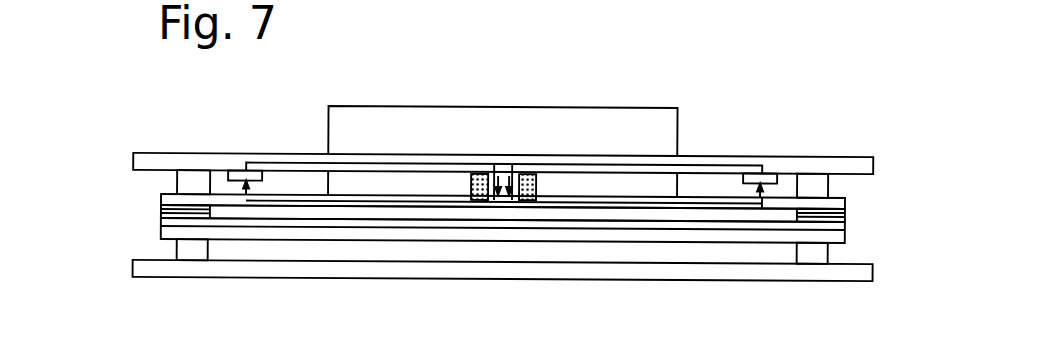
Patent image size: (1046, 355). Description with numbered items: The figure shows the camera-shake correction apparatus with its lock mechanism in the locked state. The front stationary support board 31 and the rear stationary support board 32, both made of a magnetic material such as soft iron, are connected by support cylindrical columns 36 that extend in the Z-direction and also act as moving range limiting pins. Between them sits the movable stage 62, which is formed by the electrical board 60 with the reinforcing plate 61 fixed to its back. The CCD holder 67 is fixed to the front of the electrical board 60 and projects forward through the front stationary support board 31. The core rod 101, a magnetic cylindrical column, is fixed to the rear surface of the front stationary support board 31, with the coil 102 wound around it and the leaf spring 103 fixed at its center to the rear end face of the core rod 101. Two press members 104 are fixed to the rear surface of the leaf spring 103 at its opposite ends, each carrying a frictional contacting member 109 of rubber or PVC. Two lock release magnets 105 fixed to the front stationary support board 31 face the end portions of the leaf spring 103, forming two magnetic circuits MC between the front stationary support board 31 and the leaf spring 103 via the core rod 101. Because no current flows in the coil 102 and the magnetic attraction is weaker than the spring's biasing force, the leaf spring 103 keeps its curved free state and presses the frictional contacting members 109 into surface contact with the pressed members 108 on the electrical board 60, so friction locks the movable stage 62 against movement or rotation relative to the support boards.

The front stationary support board 31 is at (815, 165).
The rear stationary support board 32 is at (742, 276).
The upper support cylindrical column 36 is at (190, 181).
The electrical board 60 is at (162, 224).
The reinforcing plate 61 is at (162, 236).
The movable stage 62 is at (448, 241).
The CCD holder 67 is at (403, 126).
The core rod 101 is at (498, 173).
The coil 102 is at (538, 185).
The leaf spring 103 is at (222, 198).
The press member 104 is at (163, 197).
The lock release magnet 105 is at (237, 175).
The pressed member 108 is at (163, 213).
The frictional contacting member 109 is at (163, 207).
The magnetic circuit MC is at (288, 158).